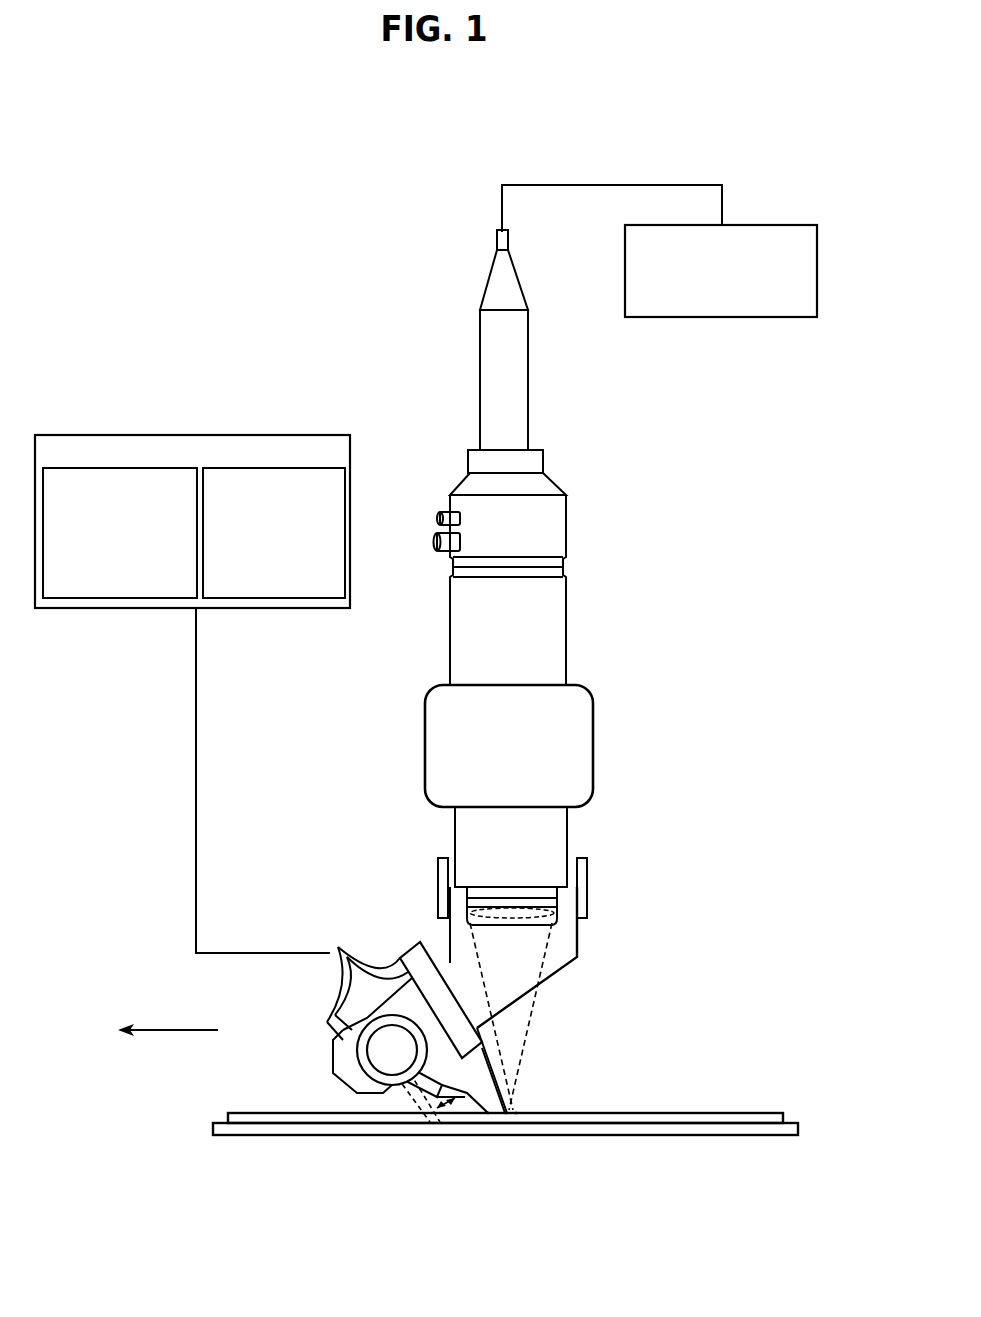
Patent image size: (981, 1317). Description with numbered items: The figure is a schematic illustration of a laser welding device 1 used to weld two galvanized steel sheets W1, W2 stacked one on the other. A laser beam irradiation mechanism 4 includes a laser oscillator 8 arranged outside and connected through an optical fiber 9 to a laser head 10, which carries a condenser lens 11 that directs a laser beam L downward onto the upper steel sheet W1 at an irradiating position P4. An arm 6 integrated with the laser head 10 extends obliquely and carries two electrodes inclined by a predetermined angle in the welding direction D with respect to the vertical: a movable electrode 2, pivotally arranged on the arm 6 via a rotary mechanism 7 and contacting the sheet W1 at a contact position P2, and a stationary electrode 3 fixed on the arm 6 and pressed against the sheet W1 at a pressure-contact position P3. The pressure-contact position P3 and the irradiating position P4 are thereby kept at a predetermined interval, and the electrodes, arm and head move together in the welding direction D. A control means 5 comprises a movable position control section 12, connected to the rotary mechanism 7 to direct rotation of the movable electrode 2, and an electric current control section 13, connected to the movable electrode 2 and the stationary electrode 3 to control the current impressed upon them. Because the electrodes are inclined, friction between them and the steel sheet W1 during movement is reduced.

The laser welding device 1 is at (568, 151).
The movable electrode 2 is at (472, 1098).
The stationary electrode 3 is at (483, 1063).
The laser beam irradiation mechanism 4 is at (583, 503).
The control means 5 is at (192, 538).
The arm 6 is at (343, 1052).
The rotary mechanism 7 is at (375, 1060).
The laser oscillator 8 is at (765, 225).
The optical fiber 9 is at (614, 185).
The laser head 10 is at (597, 753).
The condenser lens 11 is at (560, 913).
The movable position control section 12 is at (127, 598).
The electric current control section 13 is at (273, 598).
The laser beam L is at (537, 1003).
The welding direction D is at (168, 1019).
The galvanized steel sheet W1 is at (228, 1115).
The galvanized steel sheet W2 is at (217, 1122).
The contact position P2 is at (488, 1115).
The pressure-contact position P3 is at (506, 1115).
The irradiating position P4 is at (516, 1115).